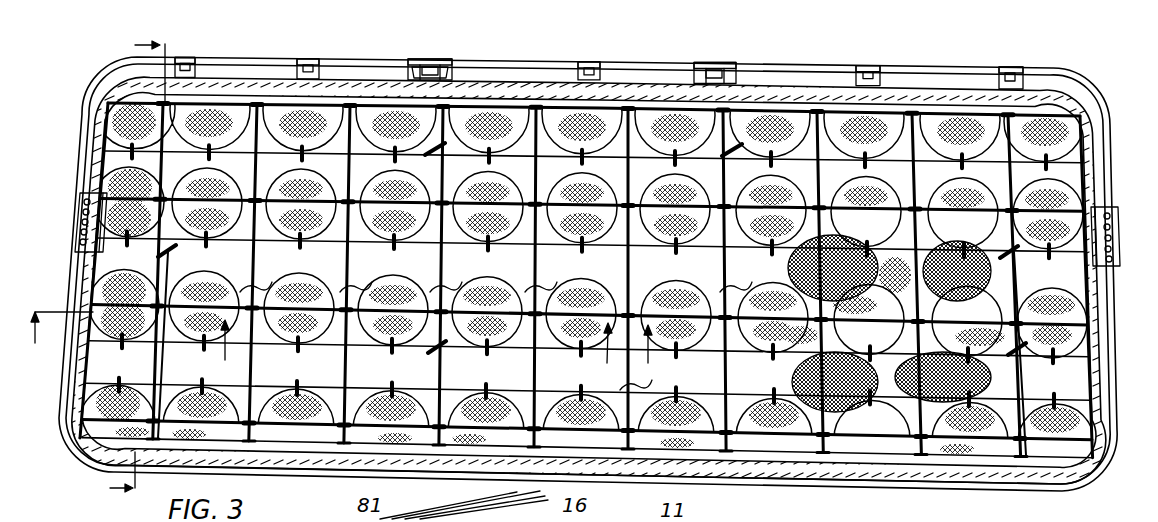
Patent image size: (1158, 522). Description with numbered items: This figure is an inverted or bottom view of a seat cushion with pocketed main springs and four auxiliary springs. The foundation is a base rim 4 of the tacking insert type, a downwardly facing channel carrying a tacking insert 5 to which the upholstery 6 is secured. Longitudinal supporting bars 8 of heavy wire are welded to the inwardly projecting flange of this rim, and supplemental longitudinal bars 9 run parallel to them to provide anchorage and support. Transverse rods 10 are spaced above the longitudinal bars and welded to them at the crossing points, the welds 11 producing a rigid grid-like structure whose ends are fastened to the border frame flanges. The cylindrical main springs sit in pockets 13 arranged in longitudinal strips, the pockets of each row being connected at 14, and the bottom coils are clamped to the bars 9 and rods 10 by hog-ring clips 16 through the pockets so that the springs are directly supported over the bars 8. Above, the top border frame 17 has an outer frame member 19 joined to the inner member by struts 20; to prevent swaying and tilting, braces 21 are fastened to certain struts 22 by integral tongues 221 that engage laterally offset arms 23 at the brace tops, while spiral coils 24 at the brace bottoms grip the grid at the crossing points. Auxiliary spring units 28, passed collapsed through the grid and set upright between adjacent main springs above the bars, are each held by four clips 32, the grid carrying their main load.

The base rim 4 is at (821, 485).
The tacking insert 5 is at (770, 494).
The upholstery 6 is at (128, 267).
The longitudinal supporting bars 8 is at (1083, 213).
The supplemental longitudinal bars 9 is at (1084, 158).
The transverse rods 10 is at (300, 165).
The welds 11 is at (636, 257).
The pockets 13 is at (249, 290).
The pocket connections 14 is at (357, 290).
The clips 16 is at (596, 254).
The top border frame 17 is at (1095, 96).
The outer frame member 19 is at (771, 67).
The struts 20 is at (312, 66).
The braces 21 is at (446, 264).
The struts 22 is at (452, 62).
The laterally offset arms 23 is at (410, 68).
The spiral coils 24 is at (168, 249).
The auxiliary spring units 28 is at (790, 372).
The clips 32 is at (870, 338).
The tongues 221 is at (428, 67).